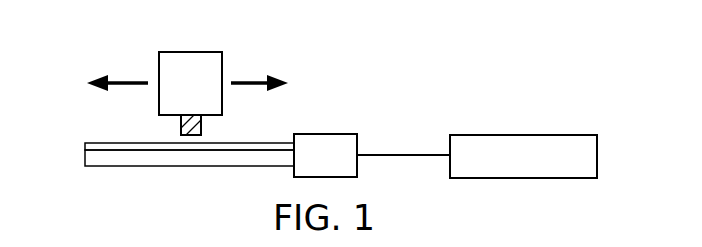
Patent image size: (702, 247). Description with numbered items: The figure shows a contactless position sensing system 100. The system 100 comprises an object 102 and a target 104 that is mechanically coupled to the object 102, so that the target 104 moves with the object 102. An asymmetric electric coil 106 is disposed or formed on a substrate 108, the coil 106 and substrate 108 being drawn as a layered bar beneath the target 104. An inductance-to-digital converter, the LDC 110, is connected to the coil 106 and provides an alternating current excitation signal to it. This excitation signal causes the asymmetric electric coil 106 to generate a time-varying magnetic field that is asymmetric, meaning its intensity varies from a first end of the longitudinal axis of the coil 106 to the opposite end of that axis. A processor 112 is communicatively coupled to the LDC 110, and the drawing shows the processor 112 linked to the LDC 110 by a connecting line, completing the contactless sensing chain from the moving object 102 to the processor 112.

The system 100 is at (407, 93).
The object 102 is at (190, 52).
The target 104 is at (180, 132).
The asymmetric electric coil 106 is at (85, 146).
The substrate 108 is at (85, 158).
The inductance-to-digital converter (LDC) 110 is at (325, 134).
The processor 112 is at (524, 135).